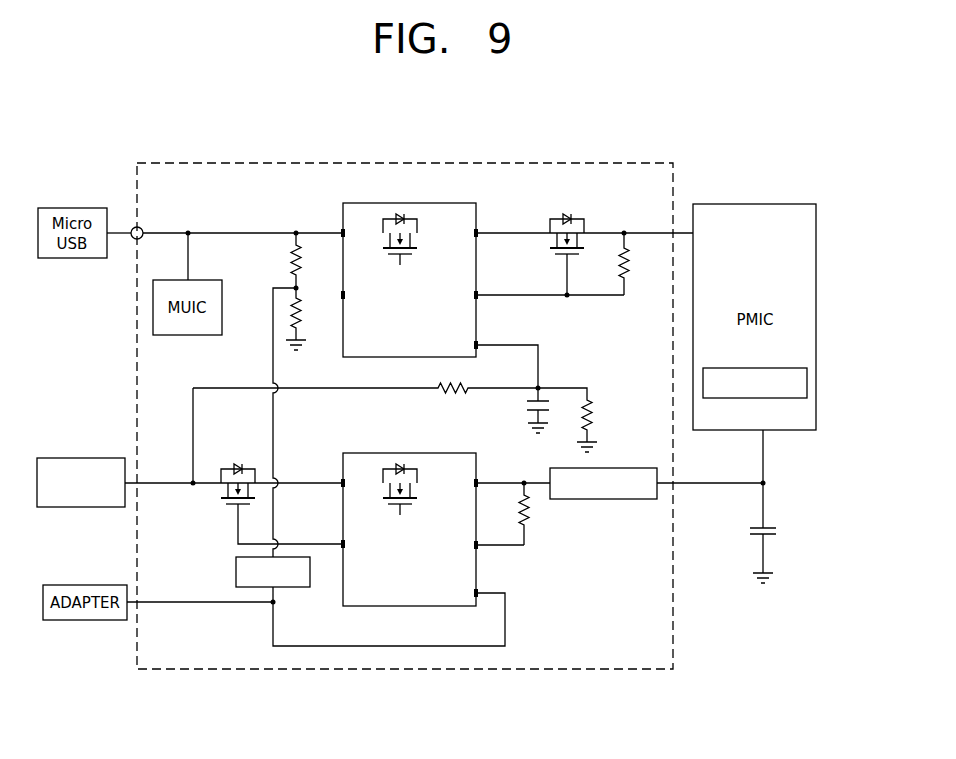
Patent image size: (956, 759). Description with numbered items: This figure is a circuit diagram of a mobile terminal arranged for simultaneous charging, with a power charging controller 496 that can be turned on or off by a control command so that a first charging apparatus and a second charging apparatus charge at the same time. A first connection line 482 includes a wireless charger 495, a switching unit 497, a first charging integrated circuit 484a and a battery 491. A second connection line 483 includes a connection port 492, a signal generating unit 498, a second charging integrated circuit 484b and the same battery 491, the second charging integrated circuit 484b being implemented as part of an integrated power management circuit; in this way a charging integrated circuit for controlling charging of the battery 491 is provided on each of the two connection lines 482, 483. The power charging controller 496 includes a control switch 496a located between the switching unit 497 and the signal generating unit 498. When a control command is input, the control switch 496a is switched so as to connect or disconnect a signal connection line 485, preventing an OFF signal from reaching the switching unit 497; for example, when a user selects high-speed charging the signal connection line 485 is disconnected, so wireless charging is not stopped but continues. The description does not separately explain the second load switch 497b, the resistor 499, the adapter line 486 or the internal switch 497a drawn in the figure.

The connection port 492 is at (135, 226).
The signal connection line 485 is at (272, 305).
The signal generating unit 498 is at (307, 245).
The second load switch IC 497b is at (422, 203).
The second connection line 483 is at (508, 228).
The resistor 499 is at (580, 378).
The adapter power line 486 is at (199, 605).
The control switch 496a is at (290, 587).
The switching unit 497 is at (406, 582).
The switching transistor 497a is at (409, 607).
The first connection line 482 is at (506, 485).
The wireless charger 495 is at (74, 458).
The first charging integrated circuit 484a is at (621, 499).
The second charging integrated circuit 484b is at (778, 398).
The battery 491 is at (765, 537).
The power charging controller 496 is at (673, 608).